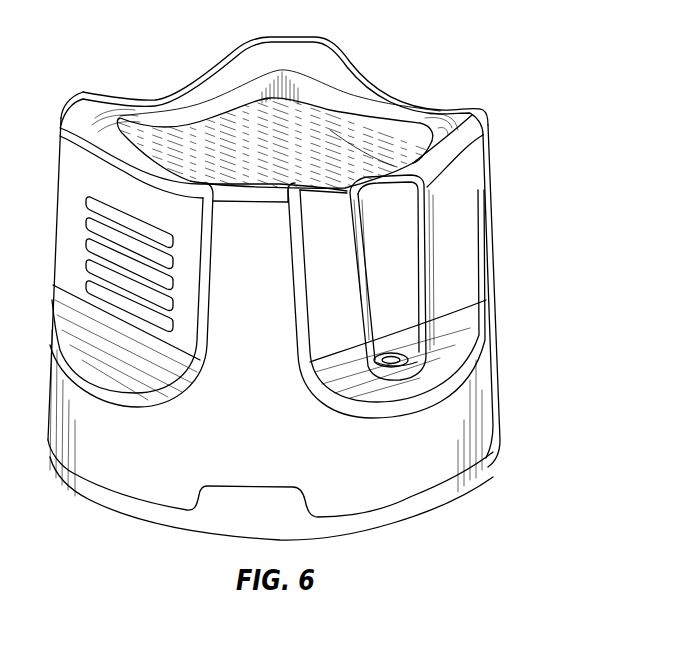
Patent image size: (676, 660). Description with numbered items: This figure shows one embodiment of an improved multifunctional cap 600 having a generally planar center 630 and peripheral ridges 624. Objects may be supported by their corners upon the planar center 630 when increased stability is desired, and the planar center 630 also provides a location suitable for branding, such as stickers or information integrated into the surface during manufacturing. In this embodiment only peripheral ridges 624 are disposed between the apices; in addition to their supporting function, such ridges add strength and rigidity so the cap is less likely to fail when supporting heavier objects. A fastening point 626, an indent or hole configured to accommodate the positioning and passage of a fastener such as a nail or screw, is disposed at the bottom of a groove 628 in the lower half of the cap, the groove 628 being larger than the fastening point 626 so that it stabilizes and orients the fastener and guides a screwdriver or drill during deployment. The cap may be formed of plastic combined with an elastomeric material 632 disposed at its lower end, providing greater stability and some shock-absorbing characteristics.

The improved multifunctional cap 600 is at (480, 42).
The peripheral ridges 624 is at (403, 101).
The fastening point 626 is at (440, 350).
The groove 628 is at (400, 224).
The planar center 630 is at (187, 132).
The elastomeric material 632 is at (472, 477).